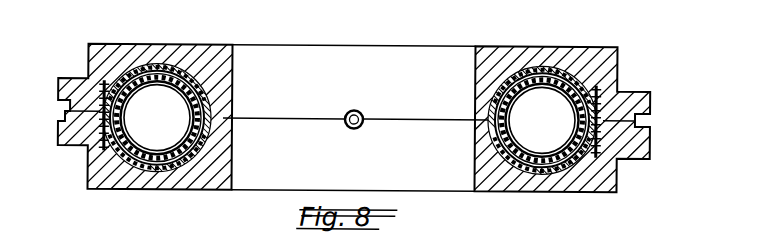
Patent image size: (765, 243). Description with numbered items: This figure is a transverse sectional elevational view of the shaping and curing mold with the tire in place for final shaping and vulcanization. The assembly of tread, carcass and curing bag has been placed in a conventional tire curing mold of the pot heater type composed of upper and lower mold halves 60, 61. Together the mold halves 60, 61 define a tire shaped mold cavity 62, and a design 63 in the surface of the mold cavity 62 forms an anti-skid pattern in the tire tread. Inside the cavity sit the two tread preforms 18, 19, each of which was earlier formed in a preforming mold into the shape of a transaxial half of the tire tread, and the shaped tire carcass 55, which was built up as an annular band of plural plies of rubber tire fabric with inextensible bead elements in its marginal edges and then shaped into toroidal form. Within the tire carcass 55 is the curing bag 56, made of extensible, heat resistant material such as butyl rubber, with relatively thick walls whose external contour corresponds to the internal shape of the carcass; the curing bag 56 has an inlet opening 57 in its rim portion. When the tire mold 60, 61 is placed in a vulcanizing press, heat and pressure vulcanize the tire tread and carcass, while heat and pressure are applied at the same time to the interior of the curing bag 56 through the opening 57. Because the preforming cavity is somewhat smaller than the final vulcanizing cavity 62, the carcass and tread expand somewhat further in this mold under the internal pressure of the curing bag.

The preform 18 is at (585, 65).
The preform 19 is at (577, 167).
The tire carcass 55 is at (503, 158).
The curing bag 56 is at (497, 133).
The inlet opening 57 is at (363, 110).
The upper mold half 60 is at (118, 45).
The lower mold half 61 is at (121, 186).
The mold cavity 62 is at (170, 72).
The design 63 is at (100, 140).